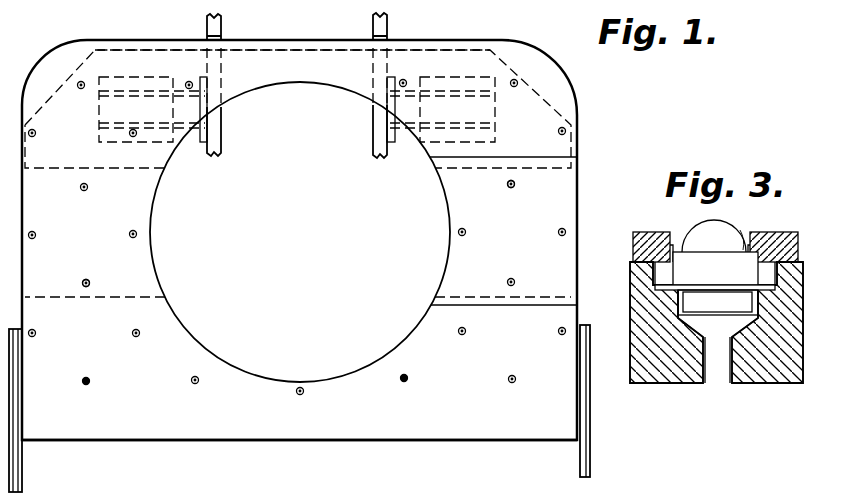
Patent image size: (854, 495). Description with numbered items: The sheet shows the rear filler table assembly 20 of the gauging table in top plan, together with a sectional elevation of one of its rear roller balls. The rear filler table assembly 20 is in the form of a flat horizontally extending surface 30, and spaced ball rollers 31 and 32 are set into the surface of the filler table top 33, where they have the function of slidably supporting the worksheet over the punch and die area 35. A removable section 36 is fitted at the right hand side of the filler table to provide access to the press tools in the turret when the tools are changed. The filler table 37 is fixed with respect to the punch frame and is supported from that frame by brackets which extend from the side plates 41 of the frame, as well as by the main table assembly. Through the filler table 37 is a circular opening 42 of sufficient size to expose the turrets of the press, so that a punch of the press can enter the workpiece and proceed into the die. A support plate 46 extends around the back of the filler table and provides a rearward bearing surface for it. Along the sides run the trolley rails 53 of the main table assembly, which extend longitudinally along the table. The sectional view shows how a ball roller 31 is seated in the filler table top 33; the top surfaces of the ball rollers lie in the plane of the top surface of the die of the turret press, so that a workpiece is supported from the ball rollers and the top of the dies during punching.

In FIG. 1, the rear filler table assembly 20 is at (584, 127).
In FIG. 1, the flat horizontally extending surface 30 is at (299, 240).
In FIG. 1, the ball roller 31 is at (511, 188).
In FIG. 3, the ball roller 31 is at (735, 222).
In FIG. 1, the ball roller 32 is at (86, 377).
In FIG. 3, the filler table top 33 is at (655, 232).
In FIG. 1, the punch and die area 35 is at (300, 232).
In FIG. 1, the removable section 36 is at (548, 197).
In FIG. 1, the filler table 37 is at (487, 415).
In FIG. 1, the side plate 41 is at (375, 124).
In FIG. 1, the circular opening 42 is at (352, 370).
In FIG. 1, the support plate 46 is at (277, 65).
In FIG. 1, the trolley rail 53 is at (18, 470).